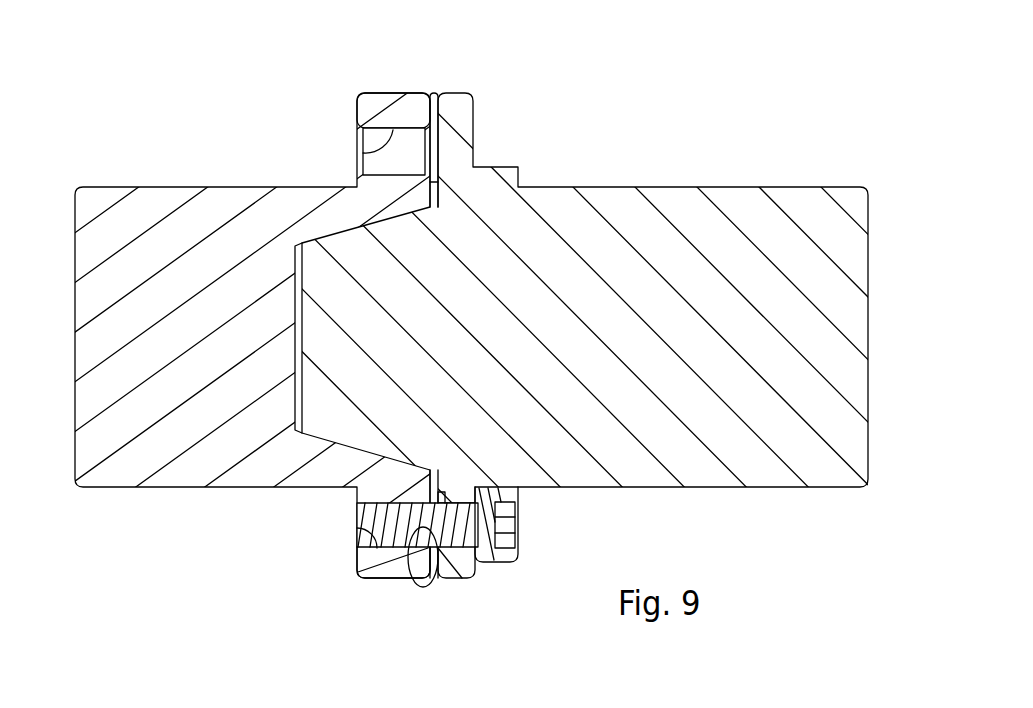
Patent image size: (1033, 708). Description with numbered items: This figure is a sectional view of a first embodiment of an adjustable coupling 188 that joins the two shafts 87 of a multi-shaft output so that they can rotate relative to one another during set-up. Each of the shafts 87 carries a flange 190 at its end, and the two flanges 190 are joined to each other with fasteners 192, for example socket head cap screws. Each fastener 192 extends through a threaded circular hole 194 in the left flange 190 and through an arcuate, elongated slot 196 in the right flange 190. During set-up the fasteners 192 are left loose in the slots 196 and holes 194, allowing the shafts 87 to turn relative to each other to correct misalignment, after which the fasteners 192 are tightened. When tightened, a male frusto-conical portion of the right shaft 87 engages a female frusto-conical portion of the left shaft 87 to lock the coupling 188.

The shaft 87 is at (173, 187).
The adjustable coupling 188 is at (377, 328).
The flange 190 is at (455, 93).
The fastener 192 is at (505, 563).
The threaded circular hole 194 is at (357, 153).
The arcuate elongated slot 196 is at (412, 580).